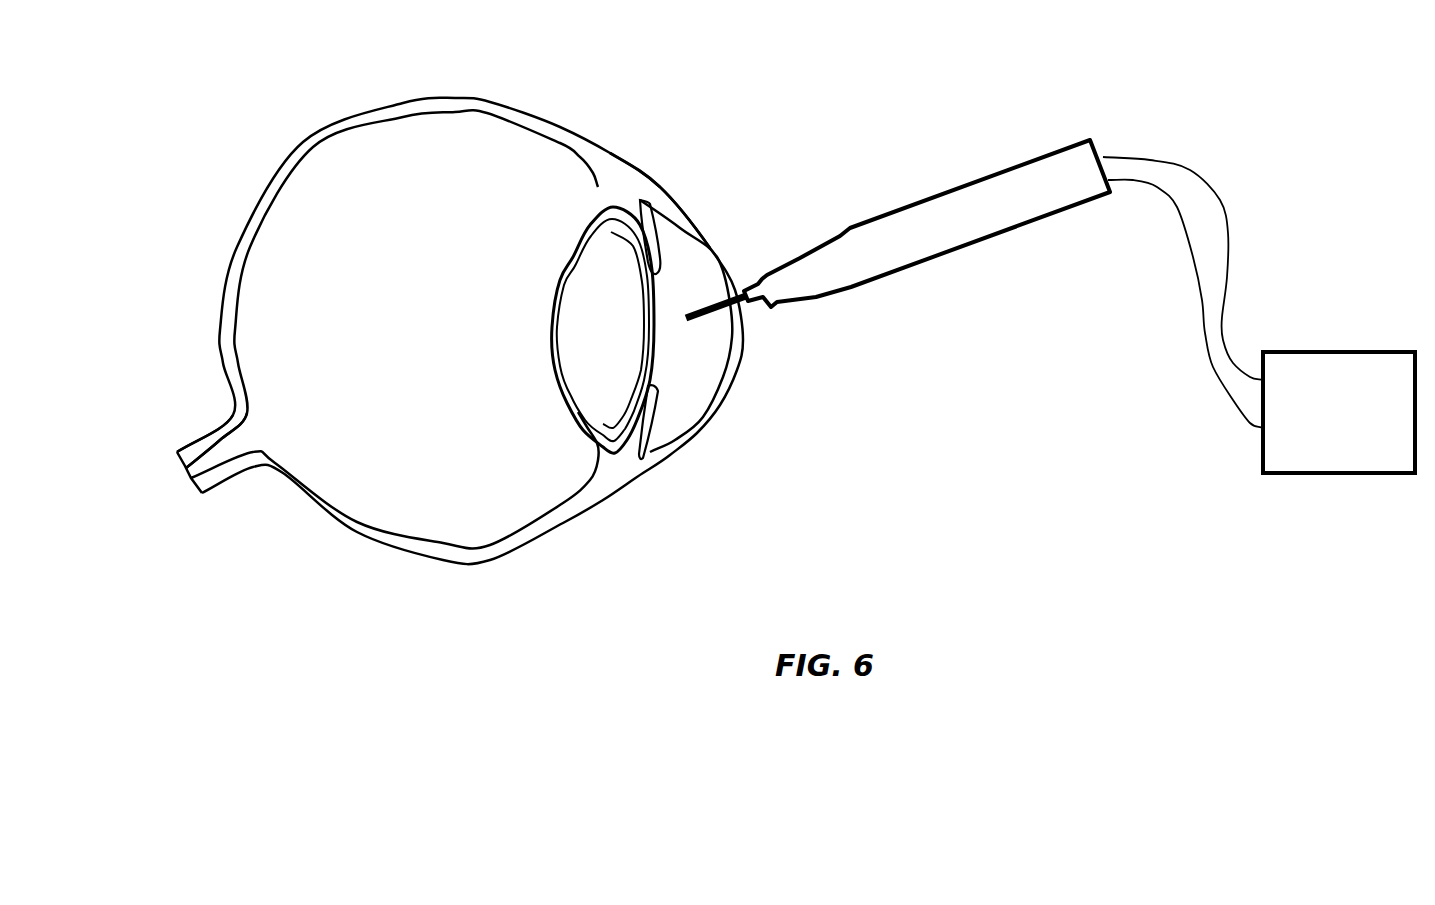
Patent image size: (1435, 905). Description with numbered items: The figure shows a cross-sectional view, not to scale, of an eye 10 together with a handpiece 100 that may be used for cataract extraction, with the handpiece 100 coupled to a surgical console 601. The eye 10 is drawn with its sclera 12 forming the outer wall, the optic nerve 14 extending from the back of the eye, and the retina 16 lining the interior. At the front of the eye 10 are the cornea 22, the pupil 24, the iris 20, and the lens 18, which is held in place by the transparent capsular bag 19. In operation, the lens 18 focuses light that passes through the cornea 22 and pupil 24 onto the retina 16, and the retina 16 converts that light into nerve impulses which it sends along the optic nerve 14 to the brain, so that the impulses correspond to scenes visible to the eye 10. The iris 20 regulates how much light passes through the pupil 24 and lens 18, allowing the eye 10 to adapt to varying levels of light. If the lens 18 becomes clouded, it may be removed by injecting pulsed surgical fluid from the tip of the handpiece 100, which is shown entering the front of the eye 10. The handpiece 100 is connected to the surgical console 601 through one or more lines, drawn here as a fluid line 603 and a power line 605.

The eye 10 is at (769, 108).
The sclera 12 is at (333, 130).
The optic nerve 14 is at (223, 483).
The retina 16 is at (359, 522).
The lens 18 is at (560, 300).
The capsular bag 19 is at (548, 330).
The iris 20 is at (653, 403).
The cornea 22 is at (720, 259).
The pupil 24 is at (703, 357).
The handpiece 100 is at (938, 246).
The surgical console 601 is at (1318, 454).
The fluid line 603 is at (1190, 168).
The power line 605 is at (1202, 325).